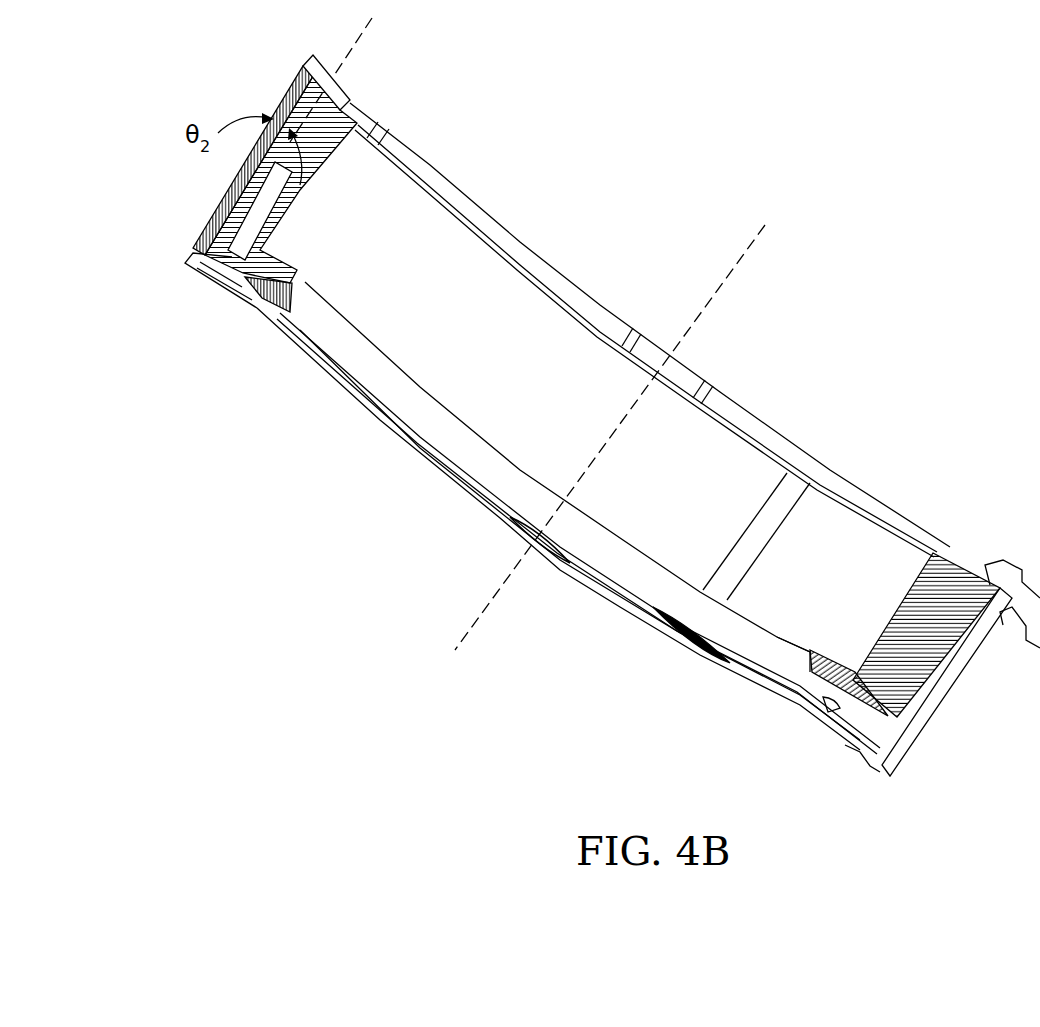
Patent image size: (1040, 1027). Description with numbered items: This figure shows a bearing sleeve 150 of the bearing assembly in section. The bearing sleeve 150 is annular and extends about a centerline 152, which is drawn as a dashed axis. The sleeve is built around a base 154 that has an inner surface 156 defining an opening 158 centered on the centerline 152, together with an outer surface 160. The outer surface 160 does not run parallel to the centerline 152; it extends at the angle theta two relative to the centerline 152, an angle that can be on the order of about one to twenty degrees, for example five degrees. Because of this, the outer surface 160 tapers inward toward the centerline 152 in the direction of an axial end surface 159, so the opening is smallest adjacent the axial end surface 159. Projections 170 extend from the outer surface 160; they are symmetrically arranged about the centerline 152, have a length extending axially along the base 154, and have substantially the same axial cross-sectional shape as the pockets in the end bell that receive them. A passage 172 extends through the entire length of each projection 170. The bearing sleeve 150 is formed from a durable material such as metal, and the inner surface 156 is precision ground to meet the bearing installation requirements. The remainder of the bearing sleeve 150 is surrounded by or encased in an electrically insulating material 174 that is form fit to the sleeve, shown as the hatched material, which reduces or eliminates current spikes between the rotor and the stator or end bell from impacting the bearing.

The bearing sleeve 150 is at (192, 92).
The centerline 152 is at (717, 288).
The base 154 is at (290, 93).
The inner surface 156 is at (397, 197).
The opening 158 is at (466, 258).
The axial end surface 159 is at (277, 313).
The outer surface 160 is at (215, 213).
The projections 170 is at (913, 733).
The passage 172 is at (850, 766).
The electrically insulating material 174 is at (950, 654).